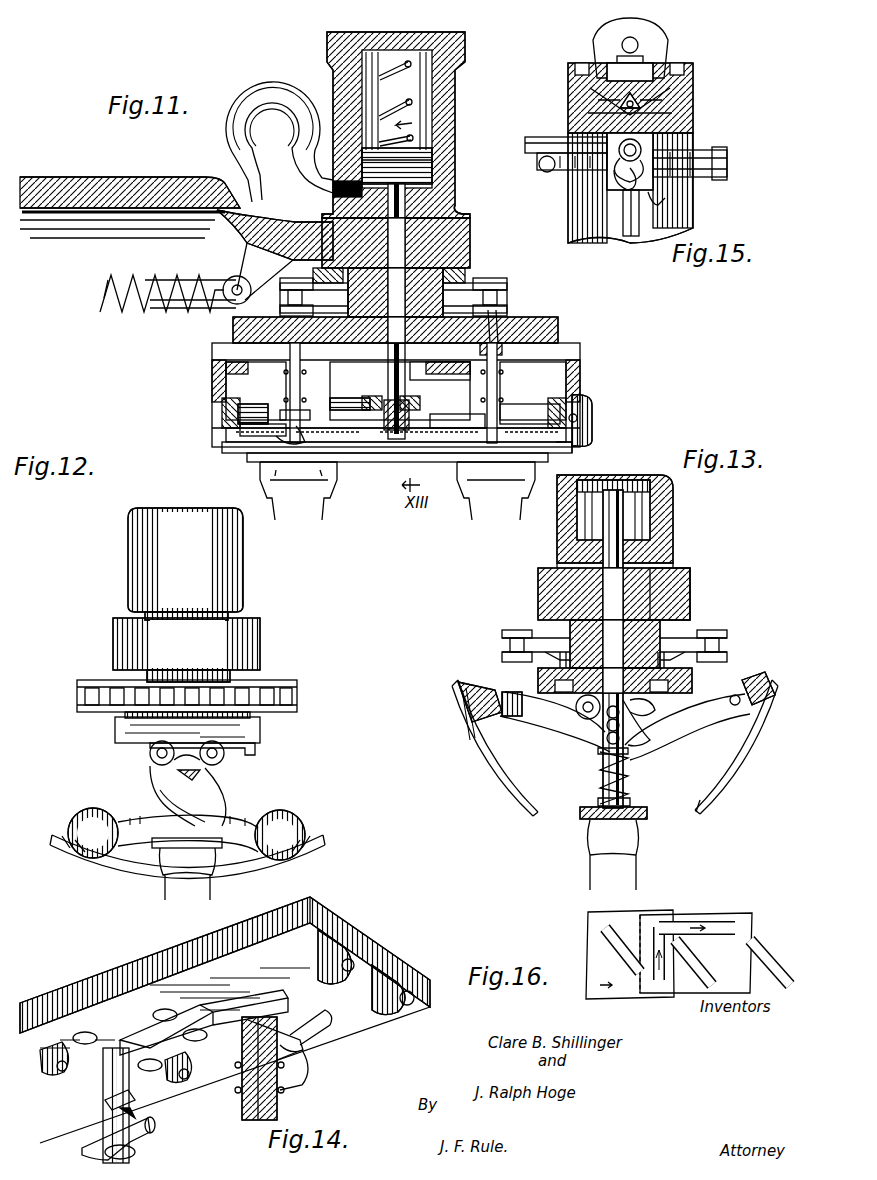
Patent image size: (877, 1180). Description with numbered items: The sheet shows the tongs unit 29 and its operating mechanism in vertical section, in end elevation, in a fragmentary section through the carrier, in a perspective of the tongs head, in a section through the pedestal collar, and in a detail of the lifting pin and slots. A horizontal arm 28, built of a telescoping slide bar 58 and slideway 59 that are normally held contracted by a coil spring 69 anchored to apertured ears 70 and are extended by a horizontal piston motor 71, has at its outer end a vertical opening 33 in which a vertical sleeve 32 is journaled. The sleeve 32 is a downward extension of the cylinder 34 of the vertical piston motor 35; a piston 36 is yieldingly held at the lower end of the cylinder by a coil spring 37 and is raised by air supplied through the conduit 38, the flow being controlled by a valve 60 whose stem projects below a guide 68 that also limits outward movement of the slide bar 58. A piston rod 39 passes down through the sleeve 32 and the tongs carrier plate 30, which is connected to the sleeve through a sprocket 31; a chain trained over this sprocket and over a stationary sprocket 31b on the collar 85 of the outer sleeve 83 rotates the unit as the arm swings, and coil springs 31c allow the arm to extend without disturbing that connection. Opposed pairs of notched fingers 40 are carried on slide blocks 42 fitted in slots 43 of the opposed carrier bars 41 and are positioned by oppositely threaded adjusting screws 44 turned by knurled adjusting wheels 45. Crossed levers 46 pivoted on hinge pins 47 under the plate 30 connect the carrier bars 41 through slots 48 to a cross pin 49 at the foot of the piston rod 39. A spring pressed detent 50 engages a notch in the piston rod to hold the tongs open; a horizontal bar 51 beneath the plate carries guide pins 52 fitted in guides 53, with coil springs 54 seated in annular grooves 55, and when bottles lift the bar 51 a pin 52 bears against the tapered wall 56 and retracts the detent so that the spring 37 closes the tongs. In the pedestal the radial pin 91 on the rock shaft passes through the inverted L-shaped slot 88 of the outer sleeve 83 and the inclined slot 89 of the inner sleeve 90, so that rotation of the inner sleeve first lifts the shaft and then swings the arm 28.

In FIG. 11, the horizontal arm 28 is at (90, 170).
In FIG. 15, the horizontal arm 28 is at (712, 121).
In FIG. 12, the horizontal arm 28 is at (262, 650).
In FIG. 11, the tongs unit 29 is at (603, 371).
In FIG. 11, the tongs carrier plate 30 is at (555, 335).
In FIG. 12, the tongs carrier plate 30 is at (243, 744).
In FIG. 13, the tongs carrier plate 30 is at (680, 688).
In FIG. 14, the tongs carrier plate 30 is at (132, 970).
In FIG. 11, the sprocket 31 is at (480, 284).
In FIG. 15, the sprocket 31 is at (700, 190).
In FIG. 13, the sprocket 31 is at (688, 630).
In FIG. 11, the stationary sprocket 31b is at (512, 298).
In FIG. 15, the stationary sprocket 31b is at (712, 162).
In FIG. 12, the stationary sprocket 31b is at (298, 688).
In FIG. 13, the stationary sprocket 31b is at (722, 645).
In FIG. 15, the coil springs 31c is at (543, 170).
In FIG. 11, the vertical sleeve 32 is at (468, 257).
In FIG. 13, the vertical sleeve 32 is at (555, 575).
In FIG. 11, the vertical opening 33 is at (455, 212).
In FIG. 11, the cylinder 34 is at (445, 107).
In FIG. 11, the vertical piston motor 35 is at (468, 156).
In FIG. 12, the vertical piston motor 35 is at (257, 570).
In FIG. 13, the vertical piston motor 35 is at (681, 507).
In FIG. 11, the piston 36 is at (418, 165).
In FIG. 13, the piston 36 is at (614, 488).
In FIG. 11, the coil spring 37 is at (396, 101).
In FIG. 11, the conduit 38 is at (270, 95).
In FIG. 15, the conduit 38 is at (618, 190).
In FIG. 11, the piston rod 39 is at (392, 362).
In FIG. 13, the piston rod 39 is at (645, 528).
In FIG. 14, the piston rod 39 is at (104, 1075).
In FIG. 11, the notched fingers 40 is at (330, 496).
In FIG. 12, the notched fingers 40 is at (140, 886).
In FIG. 13, the notched fingers 40 is at (700, 802).
In FIG. 11, the carrier bars 41 is at (244, 448).
In FIG. 13, the carrier bars 41 is at (477, 722).
In FIG. 11, the slide blocks 42 is at (516, 408).
In FIG. 13, the slide blocks 42 is at (482, 685).
In FIG. 11, the slots 43 is at (552, 450).
In FIG. 11, the adjusting screws 44 is at (450, 424).
In FIG. 13, the adjusting screws 44 is at (525, 692).
In FIG. 11, the knurled adjusting wheels 45 is at (588, 420).
In FIG. 12, the knurled adjusting wheels 45 is at (298, 822).
In FIG. 11, the crossed levers 46 is at (362, 404).
In FIG. 13, the crossed levers 46 is at (575, 740).
In FIG. 13, the hinge pins 47 is at (585, 716).
In FIG. 13, the slots 48 is at (640, 740).
In FIG. 11, the cross pin 49 is at (420, 425).
In FIG. 13, the cross pin 49 is at (603, 735).
In FIG. 14, the cross pin 49 is at (152, 1123).
In FIG. 11, the spring pressed detent 50 is at (435, 387).
In FIG. 14, the spring pressed detent 50 is at (268, 992).
In FIG. 11, the horizontal bar 51 is at (413, 384).
In FIG. 12, the horizontal bar 51 is at (220, 848).
In FIG. 13, the horizontal bar 51 is at (648, 810).
In FIG. 14, the horizontal bar 51 is at (140, 1106).
In FIG. 11, the guide pins 52 is at (305, 378).
In FIG. 13, the guide pins 52 is at (600, 778).
In FIG. 14, the guide pins 52 is at (278, 1112).
In FIG. 11, the guides 53 is at (282, 402).
In FIG. 13, the guides 53 is at (628, 772).
In FIG. 14, the guides 53 is at (242, 1095).
In FIG. 11, the coil springs 54 is at (306, 400).
In FIG. 13, the coil springs 54 is at (598, 800).
In FIG. 14, the coil springs 54 is at (288, 1070).
In FIG. 11, the annular grooves 55 is at (283, 370).
In FIG. 14, the annular grooves 55 is at (298, 1050).
In FIG. 11, the tapered wall 56 is at (505, 343).
In FIG. 15, the slide bar 58 is at (590, 101).
In FIG. 13, the slide bar 58 is at (690, 592).
In FIG. 15, the slideway 59 is at (693, 98).
In FIG. 15, the valve 60 is at (662, 205).
In FIG. 15, the guide 68 is at (626, 222).
In FIG. 11, the coil spring 69 is at (112, 308).
In FIG. 15, the coil spring 69 is at (612, 180).
In FIG. 11, the apertured ears 70 is at (250, 237).
In FIG. 15, the horizontal piston motor 71 is at (682, 48).
In FIG. 16, the outer sleeve 83 is at (680, 913).
In FIG. 15, the collar 85 is at (620, 243).
In FIG. 16, the inverted L-shaped slot 88 is at (720, 913).
In FIG. 16, the inclined slot 89 is at (608, 936).
In FIG. 16, the inner sleeve 90 is at (590, 990).
In FIG. 16, the radial pin 91 is at (652, 983).